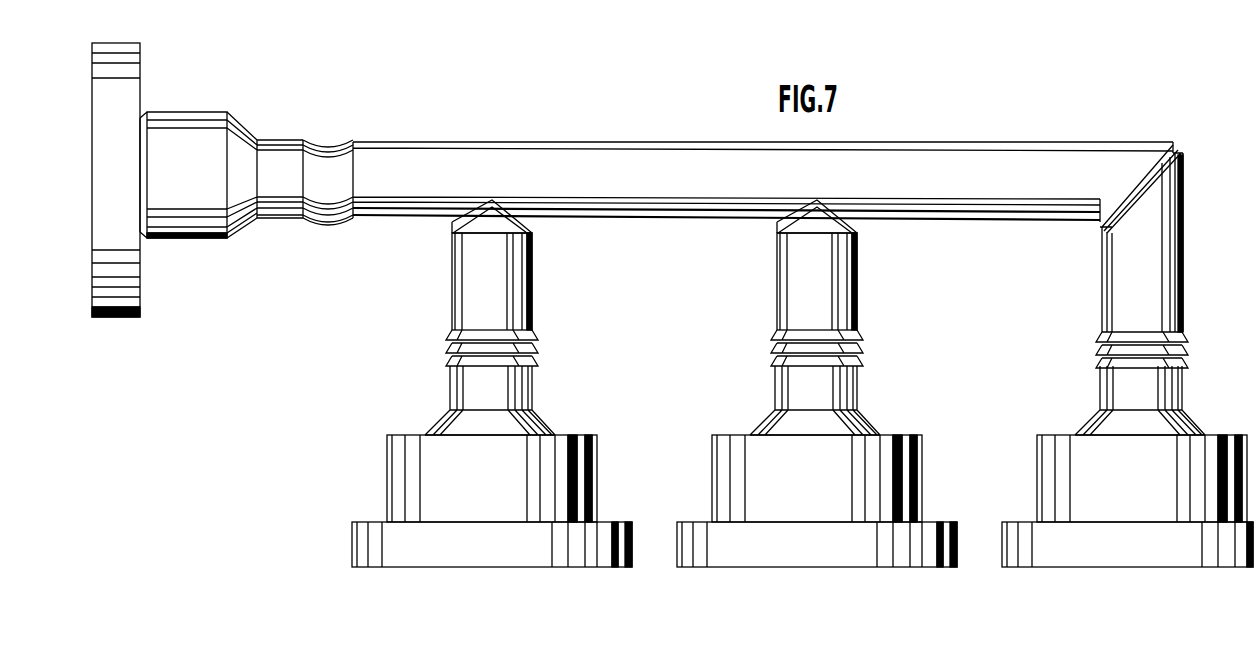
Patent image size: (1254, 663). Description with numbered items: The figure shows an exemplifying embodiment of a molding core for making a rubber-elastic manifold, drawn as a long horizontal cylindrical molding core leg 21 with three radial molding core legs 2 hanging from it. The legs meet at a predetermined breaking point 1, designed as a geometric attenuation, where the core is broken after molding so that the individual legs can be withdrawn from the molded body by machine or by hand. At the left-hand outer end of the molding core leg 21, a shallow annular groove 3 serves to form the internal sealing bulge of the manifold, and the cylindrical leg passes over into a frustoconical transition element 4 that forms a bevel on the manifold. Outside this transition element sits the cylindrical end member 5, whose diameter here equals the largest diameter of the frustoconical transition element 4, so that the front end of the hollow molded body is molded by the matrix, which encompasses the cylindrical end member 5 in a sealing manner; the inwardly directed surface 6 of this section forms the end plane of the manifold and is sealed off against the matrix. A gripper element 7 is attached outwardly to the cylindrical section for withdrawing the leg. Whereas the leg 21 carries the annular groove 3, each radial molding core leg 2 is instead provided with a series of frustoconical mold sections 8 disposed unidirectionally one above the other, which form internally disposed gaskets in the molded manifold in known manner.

The predetermined breaking point 1 is at (455, 223).
The molding core leg 2 is at (470, 277).
The annular groove 3 is at (326, 160).
The frustoconical transition element 4 is at (239, 148).
The cylindrical end member 5 is at (179, 140).
The inwardly directed surface 6 is at (413, 433).
The gripper element 7 is at (120, 74).
The ring grooves 8 is at (452, 348).
The cylindrical molding core leg 21 is at (653, 152).